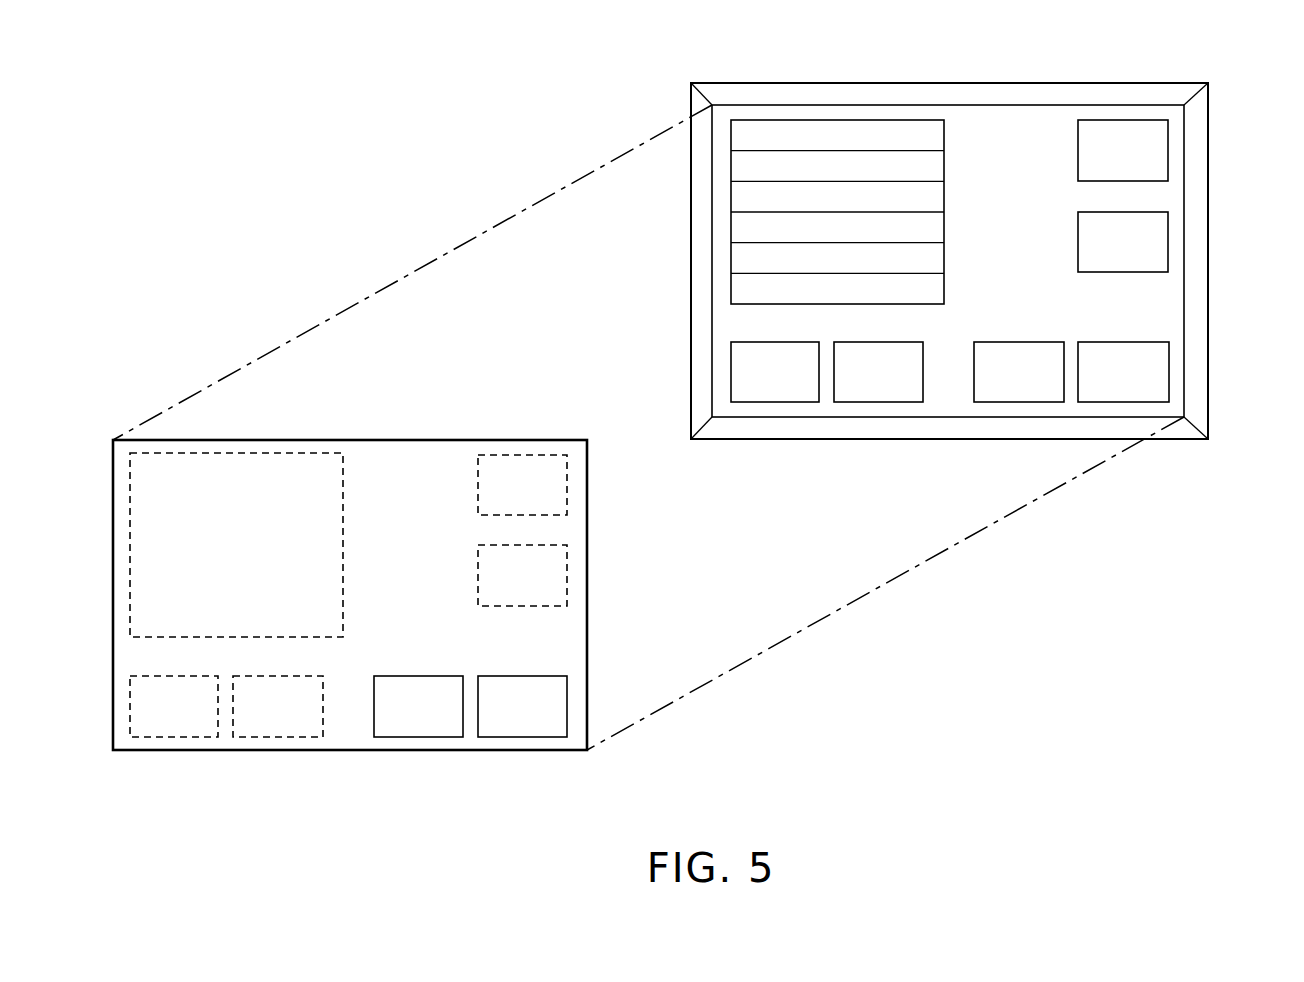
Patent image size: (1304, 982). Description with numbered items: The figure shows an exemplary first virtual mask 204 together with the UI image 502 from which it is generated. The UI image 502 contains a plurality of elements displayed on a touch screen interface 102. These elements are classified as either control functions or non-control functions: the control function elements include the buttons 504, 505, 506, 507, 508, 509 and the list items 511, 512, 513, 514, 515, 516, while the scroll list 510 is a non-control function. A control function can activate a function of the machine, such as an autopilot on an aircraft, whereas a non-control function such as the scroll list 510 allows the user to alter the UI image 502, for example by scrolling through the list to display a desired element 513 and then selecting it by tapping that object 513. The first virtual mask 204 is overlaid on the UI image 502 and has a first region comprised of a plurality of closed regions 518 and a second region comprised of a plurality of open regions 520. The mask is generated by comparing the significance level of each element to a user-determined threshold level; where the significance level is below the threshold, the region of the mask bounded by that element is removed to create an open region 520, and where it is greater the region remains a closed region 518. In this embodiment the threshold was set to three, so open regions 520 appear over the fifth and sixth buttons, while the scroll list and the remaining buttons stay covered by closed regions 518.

The touch screen interface 102 is at (691, 337).
The first virtual mask 204 is at (345, 440).
The UI image 502 is at (712, 377).
The control function element 504 is at (1168, 151).
The control function element 505 is at (1168, 248).
The control function element 506 is at (796, 390).
The control function element 507 is at (909, 390).
The control function element 508 is at (1044, 390).
The control function element 509 is at (1149, 390).
The scroll list 510 is at (908, 120).
The control function element 511 is at (731, 134).
The control function element 512 is at (731, 165).
The control function element 513 is at (731, 196).
The control function element 514 is at (731, 227).
The control function element 515 is at (731, 258).
The control function element 516 is at (731, 288).
The closed regions 518 is at (332, 510).
The open regions 520 is at (401, 724).